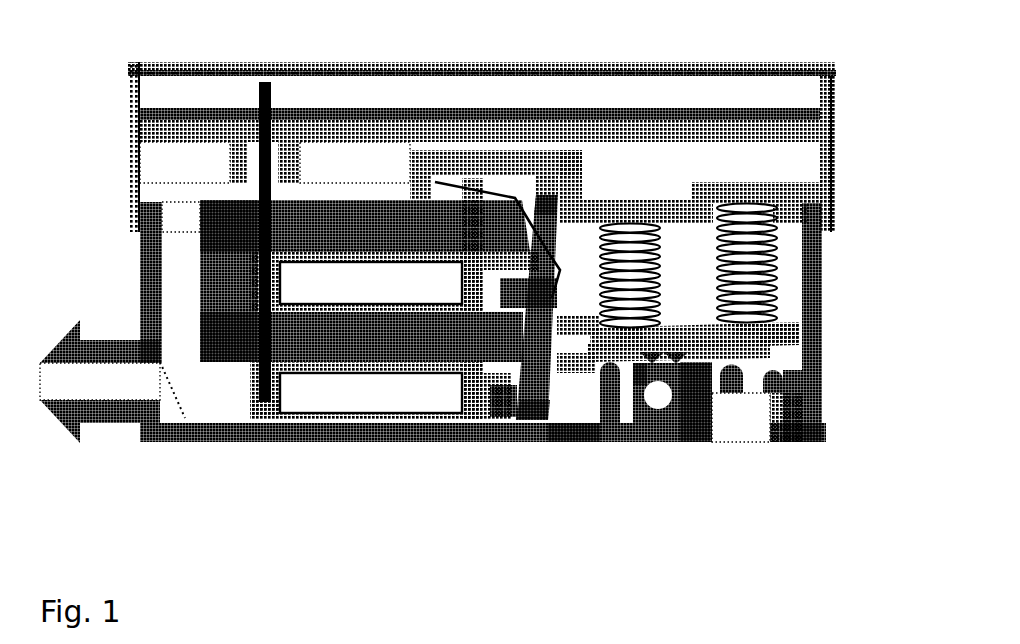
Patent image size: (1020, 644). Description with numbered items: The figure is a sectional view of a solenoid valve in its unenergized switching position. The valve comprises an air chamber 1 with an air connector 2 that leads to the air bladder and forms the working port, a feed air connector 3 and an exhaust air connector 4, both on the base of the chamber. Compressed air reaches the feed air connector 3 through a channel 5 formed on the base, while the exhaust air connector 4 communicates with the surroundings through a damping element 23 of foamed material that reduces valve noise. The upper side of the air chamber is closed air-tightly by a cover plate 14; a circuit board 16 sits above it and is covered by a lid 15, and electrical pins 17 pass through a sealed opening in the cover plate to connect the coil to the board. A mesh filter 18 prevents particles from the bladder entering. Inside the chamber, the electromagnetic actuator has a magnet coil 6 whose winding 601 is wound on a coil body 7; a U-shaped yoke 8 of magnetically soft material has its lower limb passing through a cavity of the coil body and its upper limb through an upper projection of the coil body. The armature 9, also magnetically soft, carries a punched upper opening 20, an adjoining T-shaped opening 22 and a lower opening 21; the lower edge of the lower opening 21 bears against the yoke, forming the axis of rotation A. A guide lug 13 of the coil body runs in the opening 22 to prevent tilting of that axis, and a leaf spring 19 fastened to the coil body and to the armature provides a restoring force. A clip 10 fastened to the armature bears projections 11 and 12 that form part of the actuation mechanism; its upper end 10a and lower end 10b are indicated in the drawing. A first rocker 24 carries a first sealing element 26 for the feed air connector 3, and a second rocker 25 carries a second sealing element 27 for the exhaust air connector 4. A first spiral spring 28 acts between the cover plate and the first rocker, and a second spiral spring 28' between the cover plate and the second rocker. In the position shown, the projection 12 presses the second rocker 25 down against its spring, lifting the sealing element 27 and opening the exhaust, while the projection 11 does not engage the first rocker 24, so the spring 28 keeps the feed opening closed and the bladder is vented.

The air chamber 1 is at (212, 412).
The air connector 2 is at (42, 400).
The feed air connector 3 is at (610, 440).
The exhaust air connector 4 is at (755, 382).
The channel 5 is at (677, 440).
The magnet coil 6 is at (388, 413).
The coil body 7 is at (265, 412).
The U-shaped yoke 8 is at (200, 280).
The armature 9 is at (502, 440).
The clip 10 is at (532, 440).
The armature upper end 10a is at (463, 193).
The armature lower end 10b is at (445, 440).
The projection 11 is at (587, 376).
The projection 12 is at (578, 318).
The guide lug 13 is at (543, 215).
The cover plate 14 is at (160, 190).
The lid 15 is at (662, 62).
The circuit board 16 is at (340, 115).
The electrical pins 17 is at (265, 80).
The mesh filter 18 is at (166, 425).
The leaf spring 19 is at (495, 230).
The upper opening 20 is at (575, 210).
The lower opening 21 is at (573, 440).
The T-shaped opening 22 is at (545, 268).
The damping element 23 is at (758, 430).
The first rocker 24 is at (665, 340).
The second rocker 25 is at (768, 333).
The first sealing element 26 is at (648, 440).
The second sealing element 27 is at (758, 353).
The first spiral spring 28 is at (642, 243).
The second spiral spring 28' is at (760, 240).
The winding 601 is at (312, 413).
The axis of rotation A is at (475, 440).